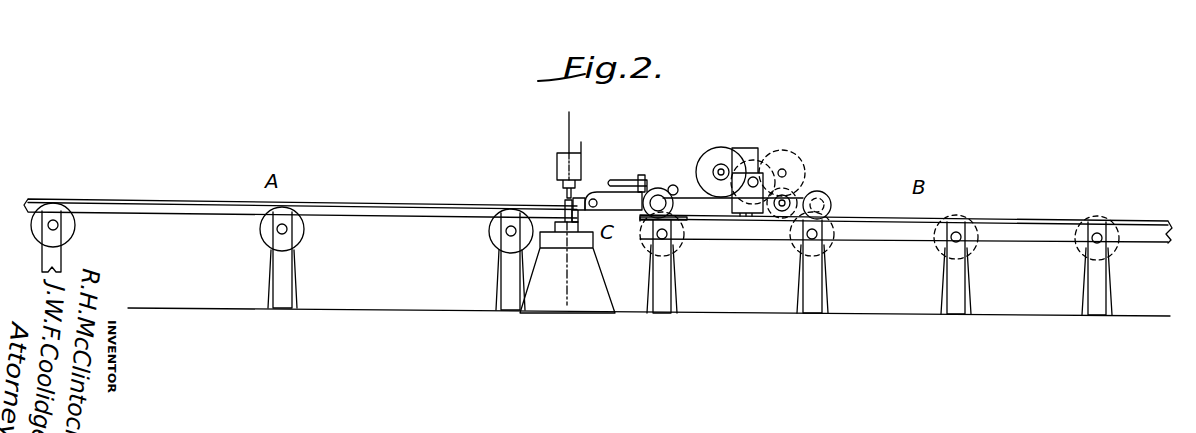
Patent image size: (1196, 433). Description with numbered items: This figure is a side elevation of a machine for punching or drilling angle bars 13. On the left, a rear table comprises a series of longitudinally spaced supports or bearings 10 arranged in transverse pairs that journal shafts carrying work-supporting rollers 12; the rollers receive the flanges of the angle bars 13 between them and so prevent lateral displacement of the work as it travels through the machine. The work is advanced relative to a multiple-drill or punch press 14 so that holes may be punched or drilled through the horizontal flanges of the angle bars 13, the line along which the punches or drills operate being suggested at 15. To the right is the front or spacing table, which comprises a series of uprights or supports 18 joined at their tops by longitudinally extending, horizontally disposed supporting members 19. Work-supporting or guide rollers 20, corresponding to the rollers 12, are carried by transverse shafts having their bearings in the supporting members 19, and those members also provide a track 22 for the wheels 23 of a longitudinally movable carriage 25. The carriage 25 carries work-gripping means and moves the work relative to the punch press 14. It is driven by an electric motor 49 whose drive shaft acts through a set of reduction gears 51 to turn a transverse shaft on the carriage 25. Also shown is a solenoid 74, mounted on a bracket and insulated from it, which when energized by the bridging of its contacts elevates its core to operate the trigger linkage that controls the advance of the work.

The supports or bearings 10 is at (60, 262).
The work-supporting rollers 12 is at (74, 224).
The angle bars 13 is at (200, 205).
The multiple-drill or punch press 14 is at (581, 153).
The line of operation of the punches or drills 15 is at (569, 131).
The uprights or supports 18 is at (822, 268).
The supporting members 19 is at (900, 232).
The work-supporting or guide rollers 20 is at (676, 243).
The track 22 is at (850, 218).
The wheels 23 is at (662, 191).
The carriage 25 is at (743, 203).
The electric motor 49 is at (721, 153).
The reduction gears 51 is at (797, 170).
The solenoid 74 is at (752, 155).